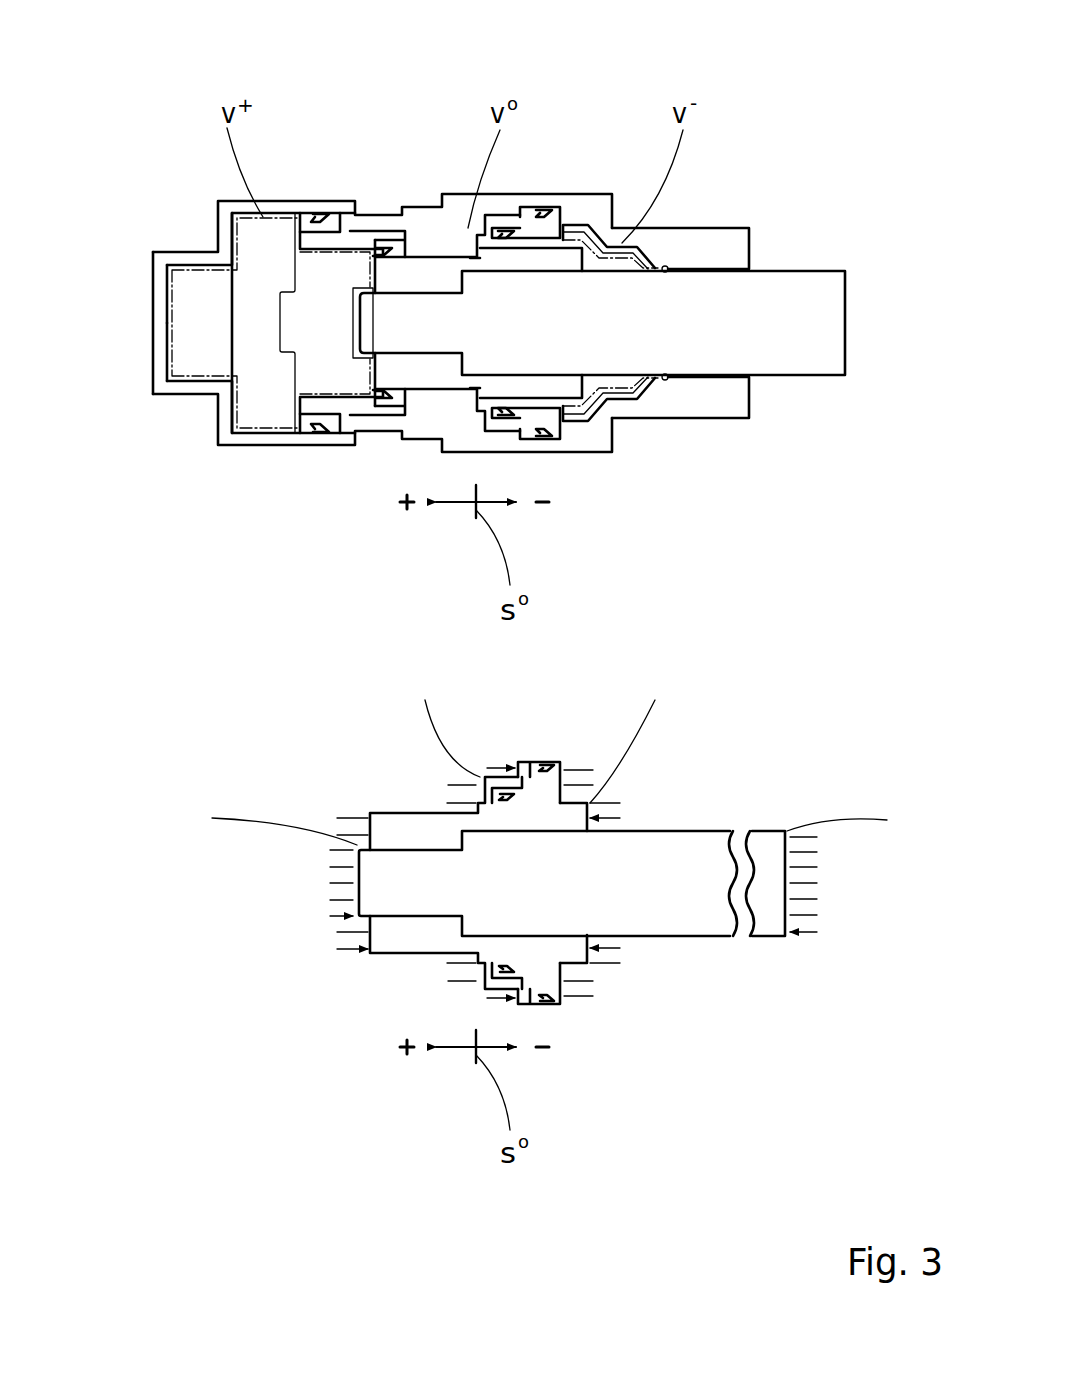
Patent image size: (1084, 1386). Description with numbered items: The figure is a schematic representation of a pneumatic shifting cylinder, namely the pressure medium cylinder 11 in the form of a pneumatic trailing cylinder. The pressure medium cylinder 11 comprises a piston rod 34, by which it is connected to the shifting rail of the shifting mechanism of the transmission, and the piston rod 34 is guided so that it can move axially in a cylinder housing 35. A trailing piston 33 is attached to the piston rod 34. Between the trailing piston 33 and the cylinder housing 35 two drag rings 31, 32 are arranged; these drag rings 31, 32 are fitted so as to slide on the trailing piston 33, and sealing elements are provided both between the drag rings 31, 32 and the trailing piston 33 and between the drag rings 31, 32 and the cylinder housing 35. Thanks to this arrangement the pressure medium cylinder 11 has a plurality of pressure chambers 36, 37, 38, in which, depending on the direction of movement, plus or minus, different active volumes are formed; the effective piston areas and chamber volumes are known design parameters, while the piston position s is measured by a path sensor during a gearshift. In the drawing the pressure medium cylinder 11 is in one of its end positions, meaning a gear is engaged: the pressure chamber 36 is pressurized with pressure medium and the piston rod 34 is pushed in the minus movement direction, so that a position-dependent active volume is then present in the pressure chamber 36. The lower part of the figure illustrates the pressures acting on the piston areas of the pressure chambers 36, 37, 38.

The pressure medium cylinder 11 is at (158, 187).
The drag ring 31 is at (362, 237).
The drag ring 32 is at (538, 232).
The trailing piston 33 is at (428, 272).
The piston rod 34 is at (798, 325).
The cylinder housing 35 is at (732, 252).
The pressure chamber 36 is at (258, 405).
The pressure chamber 37 is at (432, 408).
The pressure chamber 38 is at (620, 388).